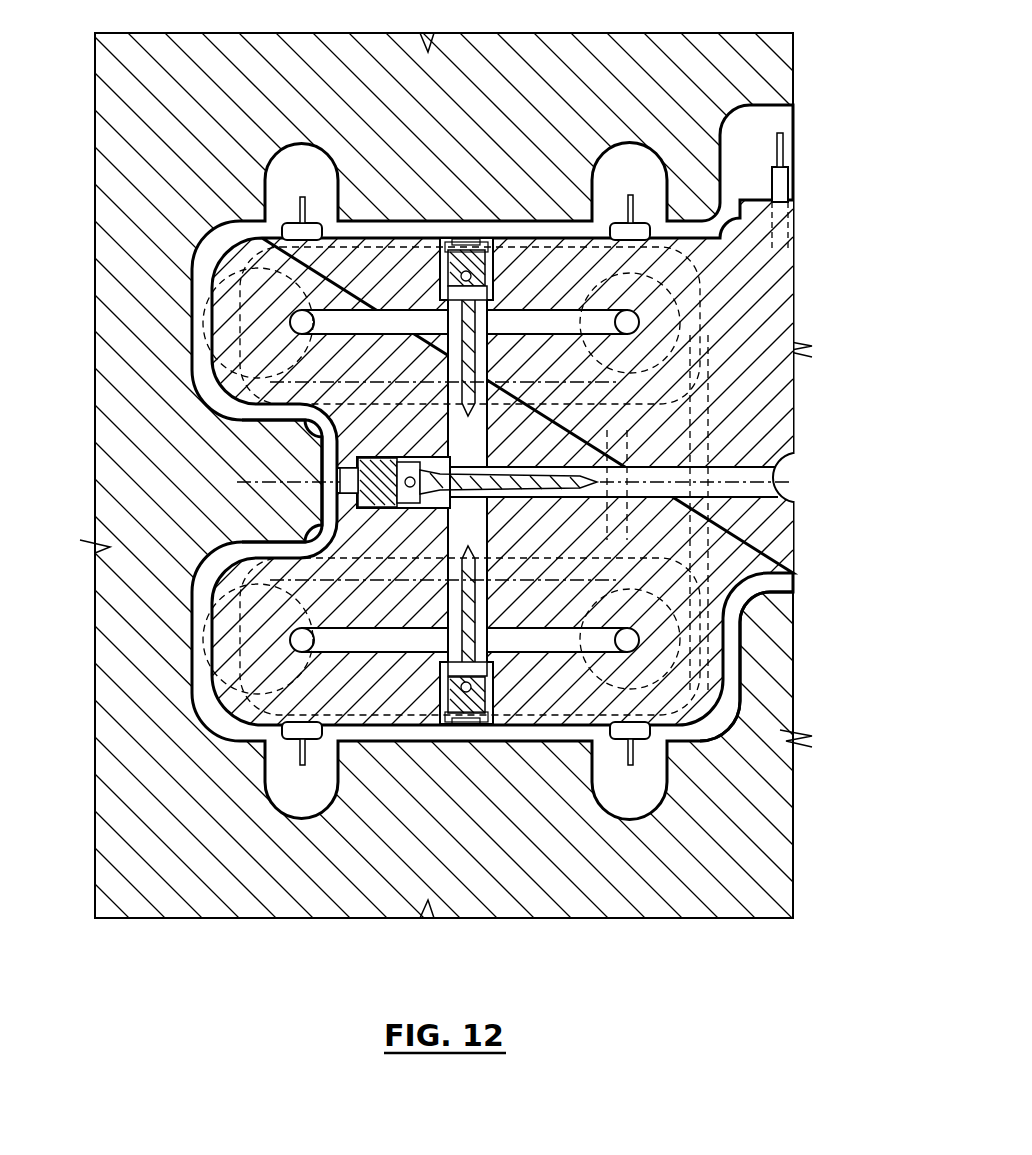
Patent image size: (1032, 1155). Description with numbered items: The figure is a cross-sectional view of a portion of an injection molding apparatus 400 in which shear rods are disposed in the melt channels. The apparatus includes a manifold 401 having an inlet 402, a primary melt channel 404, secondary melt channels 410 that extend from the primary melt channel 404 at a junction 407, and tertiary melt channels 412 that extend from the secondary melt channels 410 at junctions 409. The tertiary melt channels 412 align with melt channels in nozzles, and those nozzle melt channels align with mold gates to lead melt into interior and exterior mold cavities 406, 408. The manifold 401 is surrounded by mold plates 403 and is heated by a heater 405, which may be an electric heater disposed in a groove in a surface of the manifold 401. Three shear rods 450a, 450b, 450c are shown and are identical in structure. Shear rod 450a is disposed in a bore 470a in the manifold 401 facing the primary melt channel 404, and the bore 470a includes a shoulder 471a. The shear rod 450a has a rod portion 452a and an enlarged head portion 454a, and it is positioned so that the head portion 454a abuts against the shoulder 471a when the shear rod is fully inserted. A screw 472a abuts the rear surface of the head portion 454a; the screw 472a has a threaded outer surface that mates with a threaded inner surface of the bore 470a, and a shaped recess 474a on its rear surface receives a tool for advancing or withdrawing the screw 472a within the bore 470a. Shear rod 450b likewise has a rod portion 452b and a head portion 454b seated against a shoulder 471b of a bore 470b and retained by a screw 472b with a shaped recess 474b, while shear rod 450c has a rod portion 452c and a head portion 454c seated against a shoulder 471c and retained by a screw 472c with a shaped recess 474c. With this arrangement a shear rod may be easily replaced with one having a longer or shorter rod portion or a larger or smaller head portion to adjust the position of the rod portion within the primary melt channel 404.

The injection molding apparatus 400 is at (848, 205).
The manifold 401 is at (780, 548).
The inlet 402 is at (790, 482).
The mold plates 403 is at (785, 772).
The primary melt channel 404 is at (740, 472).
The heater 405 is at (770, 380).
The interior mold cavities 406 is at (700, 300).
The junction 407 is at (612, 418).
The exterior mold cavities 408 is at (210, 305).
The junctions 409 is at (482, 323).
The secondary melt channels 410 is at (215, 545).
The tertiary melt channels 412 is at (380, 316).
The shear rod 450a is at (438, 462).
The shear rod 450b is at (490, 722).
The shear rod 450c is at (506, 245).
The rod portion 452a is at (466, 465).
The rod portion 452b is at (483, 670).
The rod portion 452c is at (492, 270).
The head portion 454a is at (398, 500).
The head portion 454b is at (450, 648).
The head portion 454c is at (450, 300).
The bore 470a is at (340, 468).
The bore 470b is at (445, 720).
The shoulder 471a is at (462, 518).
The shoulder 471b is at (440, 722).
The shoulder 471c is at (445, 250).
The screw 472a is at (358, 505).
The screw 472b is at (462, 725).
The screw 472c is at (483, 245).
The shaped recess 474a is at (340, 488).
The shaped recess 474b is at (480, 725).
The shaped recess 474c is at (462, 245).